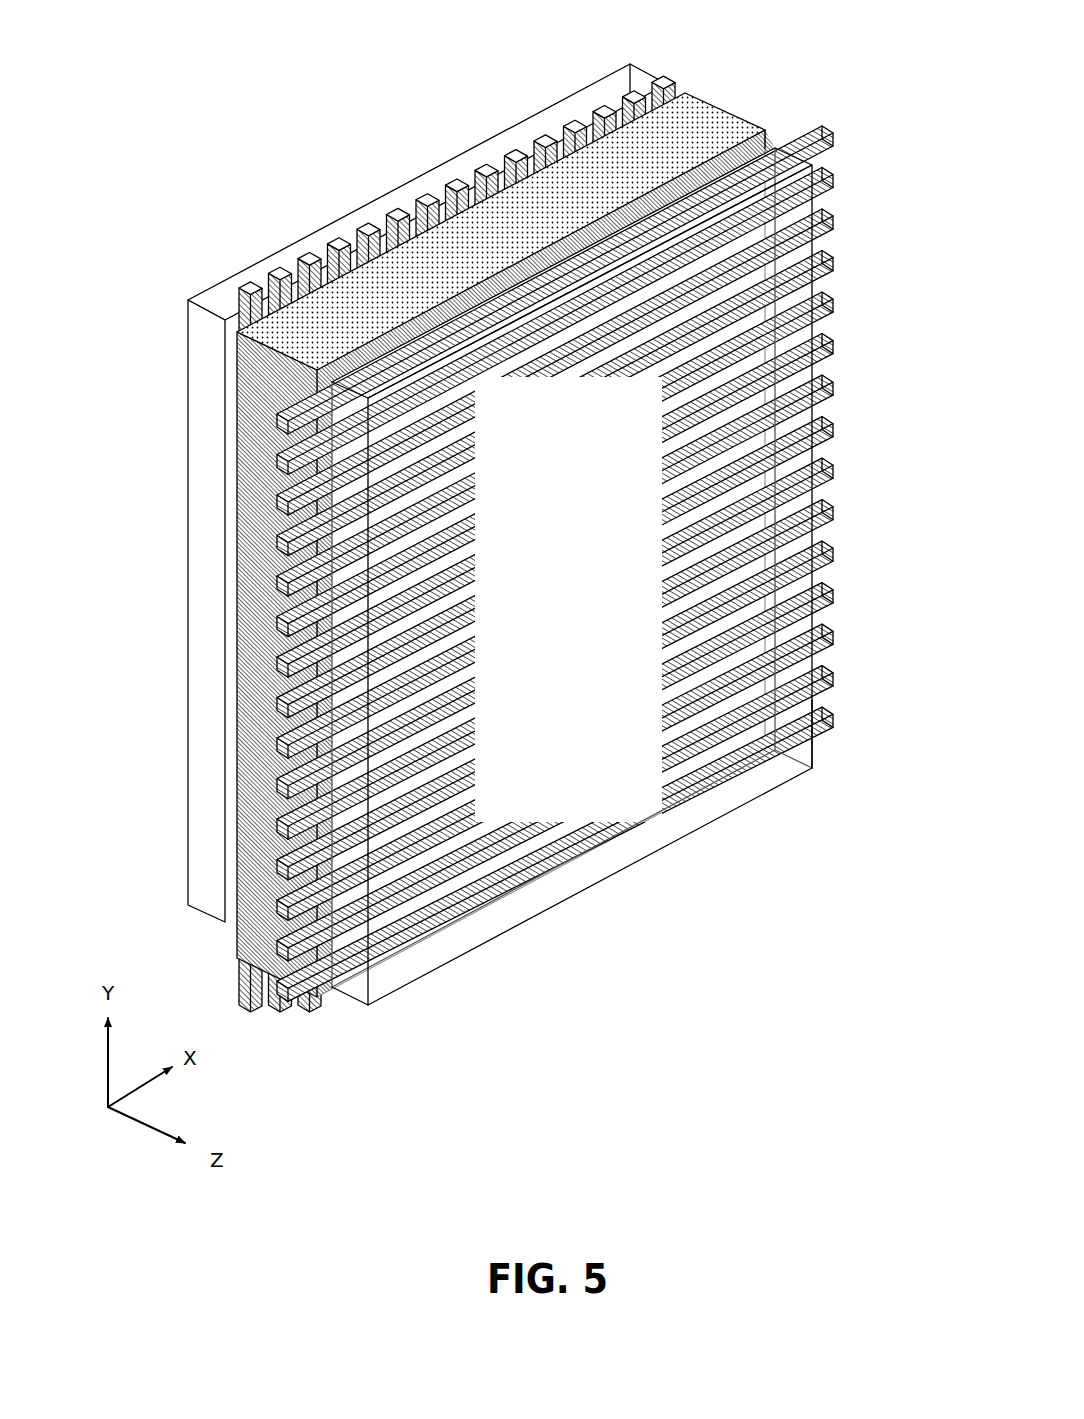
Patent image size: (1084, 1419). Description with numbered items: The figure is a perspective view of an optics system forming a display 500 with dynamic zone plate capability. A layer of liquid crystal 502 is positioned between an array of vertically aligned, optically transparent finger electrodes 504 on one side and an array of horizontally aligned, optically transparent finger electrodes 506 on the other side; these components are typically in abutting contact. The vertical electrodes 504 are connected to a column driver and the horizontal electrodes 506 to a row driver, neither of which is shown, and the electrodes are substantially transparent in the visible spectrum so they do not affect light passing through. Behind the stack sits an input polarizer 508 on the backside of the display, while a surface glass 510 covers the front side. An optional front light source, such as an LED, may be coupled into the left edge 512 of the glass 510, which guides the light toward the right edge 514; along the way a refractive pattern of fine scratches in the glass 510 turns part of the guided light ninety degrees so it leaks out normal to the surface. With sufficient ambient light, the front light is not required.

The display 500 is at (226, 62).
The liquid crystal 502 is at (717, 108).
The vertically aligned, optically transparent finger electrodes 504 is at (389, 204).
The horizontally aligned, optically transparent finger electrodes 506 is at (827, 116).
The input polarizer 508 is at (205, 292).
The surface glass 510 is at (609, 607).
The left edge 512 is at (352, 984).
The right edge 514 is at (808, 738).